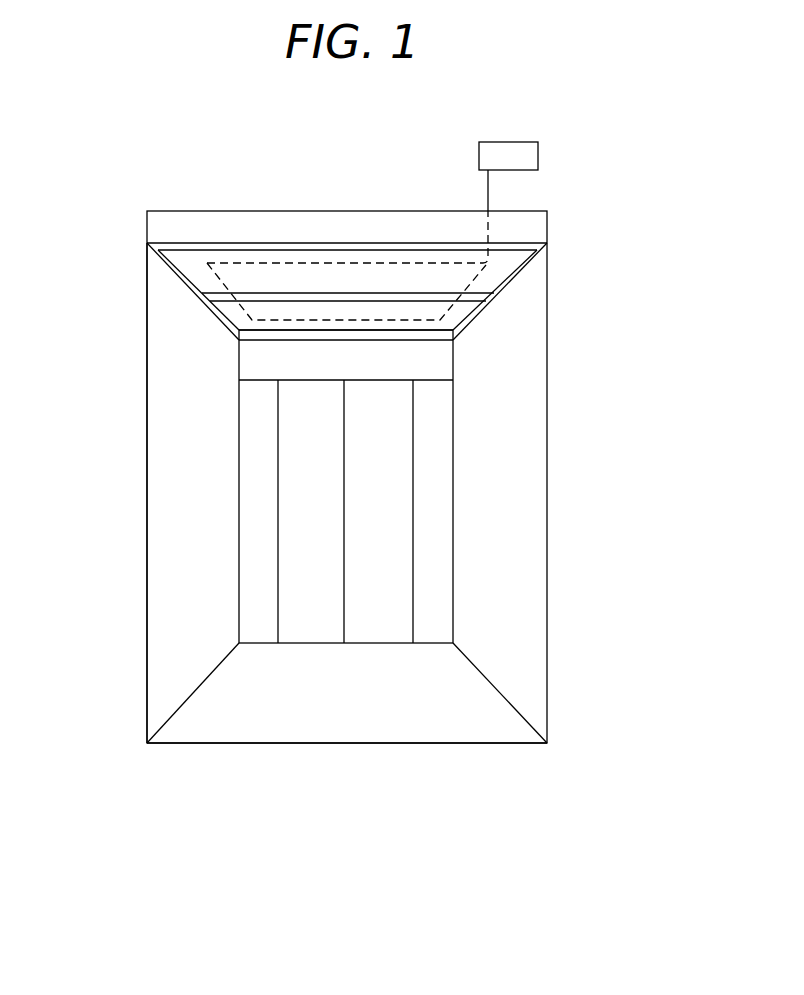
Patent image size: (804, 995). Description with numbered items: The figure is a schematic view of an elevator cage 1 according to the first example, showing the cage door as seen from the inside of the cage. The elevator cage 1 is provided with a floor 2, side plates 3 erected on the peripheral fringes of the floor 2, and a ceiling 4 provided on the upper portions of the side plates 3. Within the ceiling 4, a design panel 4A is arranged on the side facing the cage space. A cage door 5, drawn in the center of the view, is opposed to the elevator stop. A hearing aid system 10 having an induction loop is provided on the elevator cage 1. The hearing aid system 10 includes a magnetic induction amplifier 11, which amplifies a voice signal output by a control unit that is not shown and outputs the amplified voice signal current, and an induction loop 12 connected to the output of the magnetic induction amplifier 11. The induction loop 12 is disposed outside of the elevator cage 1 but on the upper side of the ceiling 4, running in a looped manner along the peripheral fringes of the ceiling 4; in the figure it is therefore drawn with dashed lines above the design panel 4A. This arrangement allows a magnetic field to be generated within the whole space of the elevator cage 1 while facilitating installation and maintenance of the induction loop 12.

The elevator cage 1 is at (606, 418).
The floor 2 is at (342, 725).
The side plates 3 is at (170, 522).
The ceiling 4 is at (288, 225).
The design panel 4A is at (190, 258).
The cage door 5 is at (400, 547).
The hearing aid system 10 is at (512, 191).
The magnetic induction amplifier 11 is at (538, 152).
The induction loop 12 is at (358, 260).